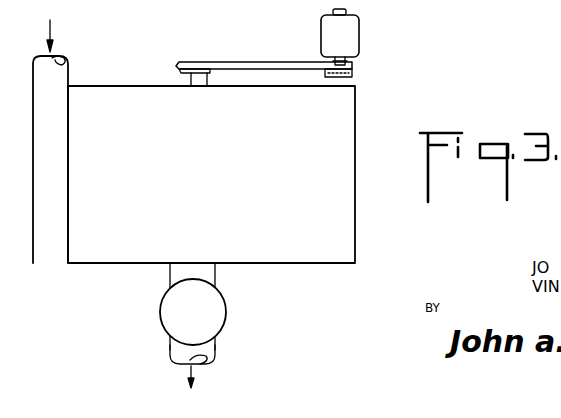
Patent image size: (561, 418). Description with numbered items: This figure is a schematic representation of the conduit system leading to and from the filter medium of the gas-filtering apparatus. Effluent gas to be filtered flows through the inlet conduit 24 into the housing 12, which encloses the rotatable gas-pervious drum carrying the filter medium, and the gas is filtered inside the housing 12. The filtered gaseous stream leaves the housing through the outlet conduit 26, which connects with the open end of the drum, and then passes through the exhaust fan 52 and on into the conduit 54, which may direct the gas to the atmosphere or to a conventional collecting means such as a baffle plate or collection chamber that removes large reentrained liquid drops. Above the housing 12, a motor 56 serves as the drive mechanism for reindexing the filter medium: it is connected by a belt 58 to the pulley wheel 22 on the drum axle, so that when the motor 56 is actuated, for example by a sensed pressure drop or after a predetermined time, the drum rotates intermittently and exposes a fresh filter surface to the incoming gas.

The housing 12 is at (148, 86).
The pulley wheel 22 is at (197, 63).
The inlet conduit 24 is at (66, 70).
The outlet conduit 26 is at (213, 276).
The exhaust fan 52 is at (227, 312).
The conduit 54 is at (212, 348).
The motor 56 is at (346, 50).
The belt 58 is at (265, 63).